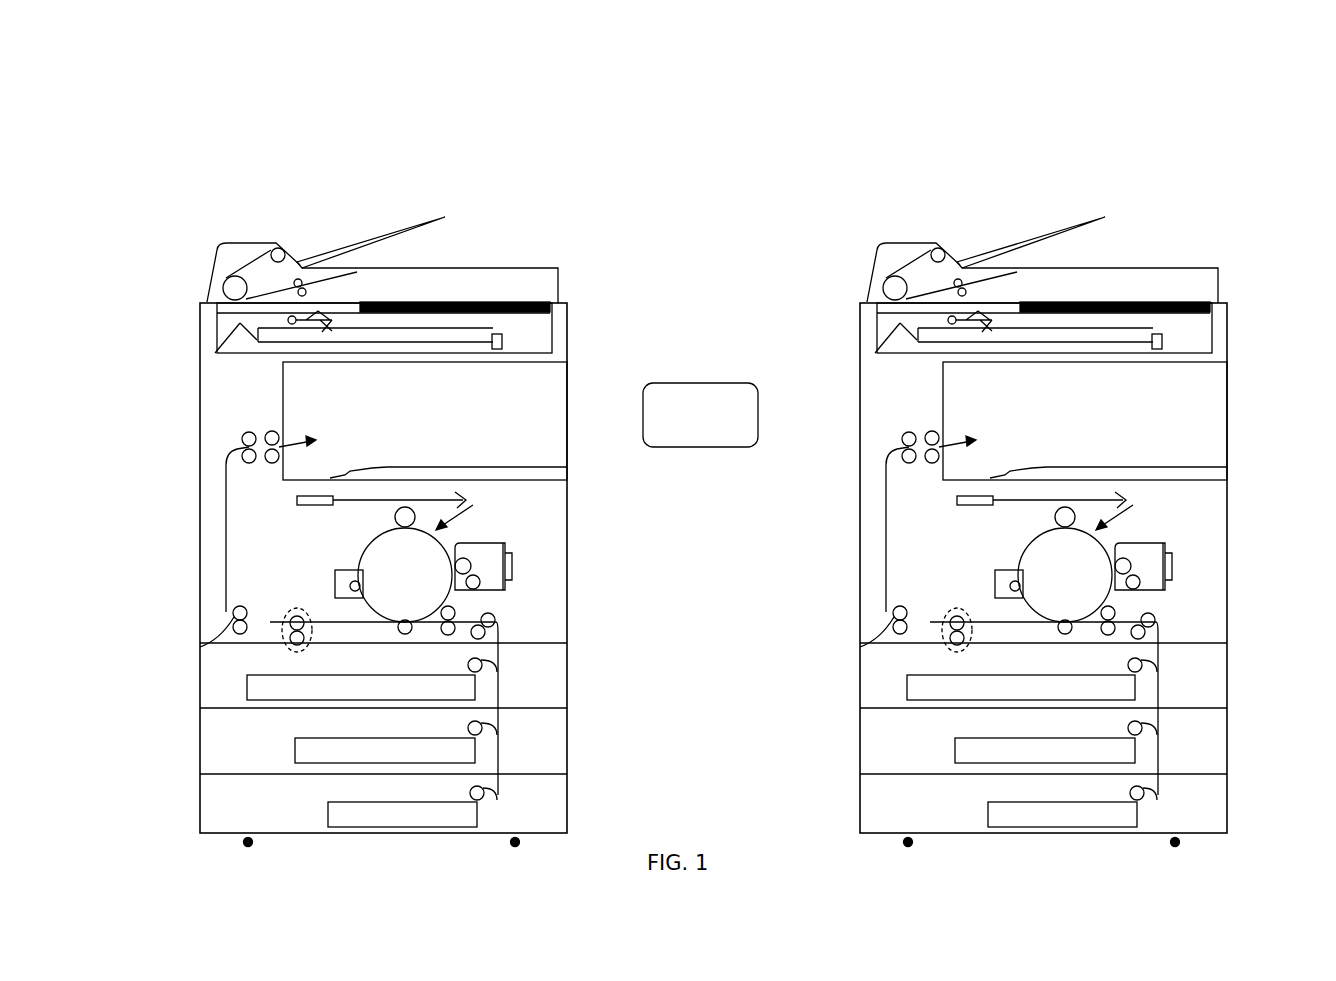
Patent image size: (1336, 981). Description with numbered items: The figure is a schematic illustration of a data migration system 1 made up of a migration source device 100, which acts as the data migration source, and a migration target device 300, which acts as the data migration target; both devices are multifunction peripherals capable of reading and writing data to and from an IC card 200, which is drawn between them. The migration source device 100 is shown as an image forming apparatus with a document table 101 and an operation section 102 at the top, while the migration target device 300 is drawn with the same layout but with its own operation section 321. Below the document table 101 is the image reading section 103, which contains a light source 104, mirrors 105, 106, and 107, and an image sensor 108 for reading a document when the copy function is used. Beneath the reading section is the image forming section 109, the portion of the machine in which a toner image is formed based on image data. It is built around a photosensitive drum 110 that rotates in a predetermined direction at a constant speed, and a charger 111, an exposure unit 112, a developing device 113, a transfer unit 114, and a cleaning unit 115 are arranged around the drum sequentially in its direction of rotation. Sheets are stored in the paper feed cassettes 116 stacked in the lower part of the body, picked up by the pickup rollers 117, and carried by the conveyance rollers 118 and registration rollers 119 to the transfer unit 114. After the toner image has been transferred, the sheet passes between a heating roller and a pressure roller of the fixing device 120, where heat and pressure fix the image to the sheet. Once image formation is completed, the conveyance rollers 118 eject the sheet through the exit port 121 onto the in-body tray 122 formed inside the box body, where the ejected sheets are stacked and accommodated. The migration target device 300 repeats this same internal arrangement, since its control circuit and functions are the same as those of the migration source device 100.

The data migration system 1 is at (690, 101).
The migration source device 100 is at (361, 157).
The migration target device 300 is at (1039, 157).
The IC card 200 is at (700, 383).
The document table 101 is at (462, 300).
The operation section 102 is at (528, 300).
The operation section 321 is at (1131, 240).
The image reading section 103 is at (194, 304).
The light source 104 is at (333, 304).
The mirror 105 is at (332, 324).
The mirror 106 is at (215, 353).
The mirror 107 is at (257, 340).
The image sensor 108 is at (500, 340).
The image forming section 109 is at (192, 631).
The photosensitive drum 110 is at (362, 555).
The charger 111 is at (394, 514).
The exposure unit 112 is at (297, 500).
The developing device 113 is at (512, 562).
The transfer unit 114 is at (400, 630).
The cleaning unit 115 is at (335, 575).
The paper feed cassette 116 is at (255, 692).
The pickup roller 117 is at (482, 665).
The conveyance roller 118 is at (495, 615).
The registration roller 119 is at (445, 637).
The fixing device 120 is at (275, 622).
The exit port 121 is at (292, 433).
The in-body tray 122 is at (372, 468).